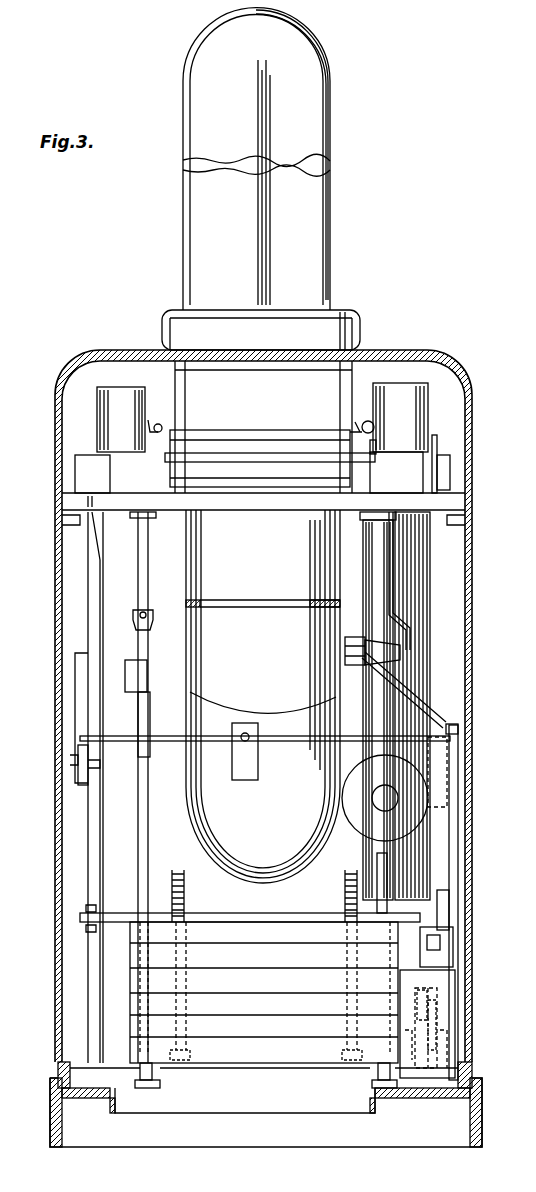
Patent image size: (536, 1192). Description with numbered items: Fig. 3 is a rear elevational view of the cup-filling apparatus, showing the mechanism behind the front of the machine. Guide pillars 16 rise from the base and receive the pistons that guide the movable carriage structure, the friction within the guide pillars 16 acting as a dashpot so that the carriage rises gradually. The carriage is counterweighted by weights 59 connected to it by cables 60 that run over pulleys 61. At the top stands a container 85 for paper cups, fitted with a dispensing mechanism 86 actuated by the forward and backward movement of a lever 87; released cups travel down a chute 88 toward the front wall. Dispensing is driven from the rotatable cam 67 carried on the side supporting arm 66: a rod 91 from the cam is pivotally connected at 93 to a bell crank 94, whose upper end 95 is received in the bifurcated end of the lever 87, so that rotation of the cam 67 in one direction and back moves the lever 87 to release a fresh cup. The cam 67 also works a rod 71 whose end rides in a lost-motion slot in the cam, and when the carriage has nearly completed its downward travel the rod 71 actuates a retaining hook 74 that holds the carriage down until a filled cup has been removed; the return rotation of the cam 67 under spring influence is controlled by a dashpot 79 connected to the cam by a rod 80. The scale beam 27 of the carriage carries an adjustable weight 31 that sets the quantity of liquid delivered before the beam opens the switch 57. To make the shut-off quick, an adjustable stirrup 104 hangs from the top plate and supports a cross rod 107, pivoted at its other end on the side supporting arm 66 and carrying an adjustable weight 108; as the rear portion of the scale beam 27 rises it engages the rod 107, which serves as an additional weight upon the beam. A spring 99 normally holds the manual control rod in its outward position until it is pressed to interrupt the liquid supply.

The container 85 is at (327, 240).
The dispensing mechanism 86 is at (262, 440).
The upper end of bell crank 95 is at (372, 452).
The pulleys 61 is at (437, 445).
The bell crank 94 is at (362, 470).
The lever 87 is at (376, 463).
The adjustable stirrup 104 is at (96, 552).
The cables 60 is at (438, 560).
The chute 88 is at (272, 580).
The switch 57 is at (130, 690).
The pivotal connection 93 is at (345, 652).
The guide pillars 16 is at (420, 664).
The rod 91 is at (380, 692).
The spring 99 is at (458, 727).
The weight 31 is at (76, 714).
The adjustable weight 108 is at (258, 764).
The cross rod 107 is at (176, 742).
The side supporting arm 66 is at (458, 782).
The scale beam 27 is at (82, 790).
The rotatable cam 67 is at (449, 912).
The rod 80 is at (440, 964).
The rod 71 is at (432, 1007).
The retaining hook 74 is at (428, 1015).
The dashpot 79 is at (457, 1050).
The weights 59 is at (242, 1045).